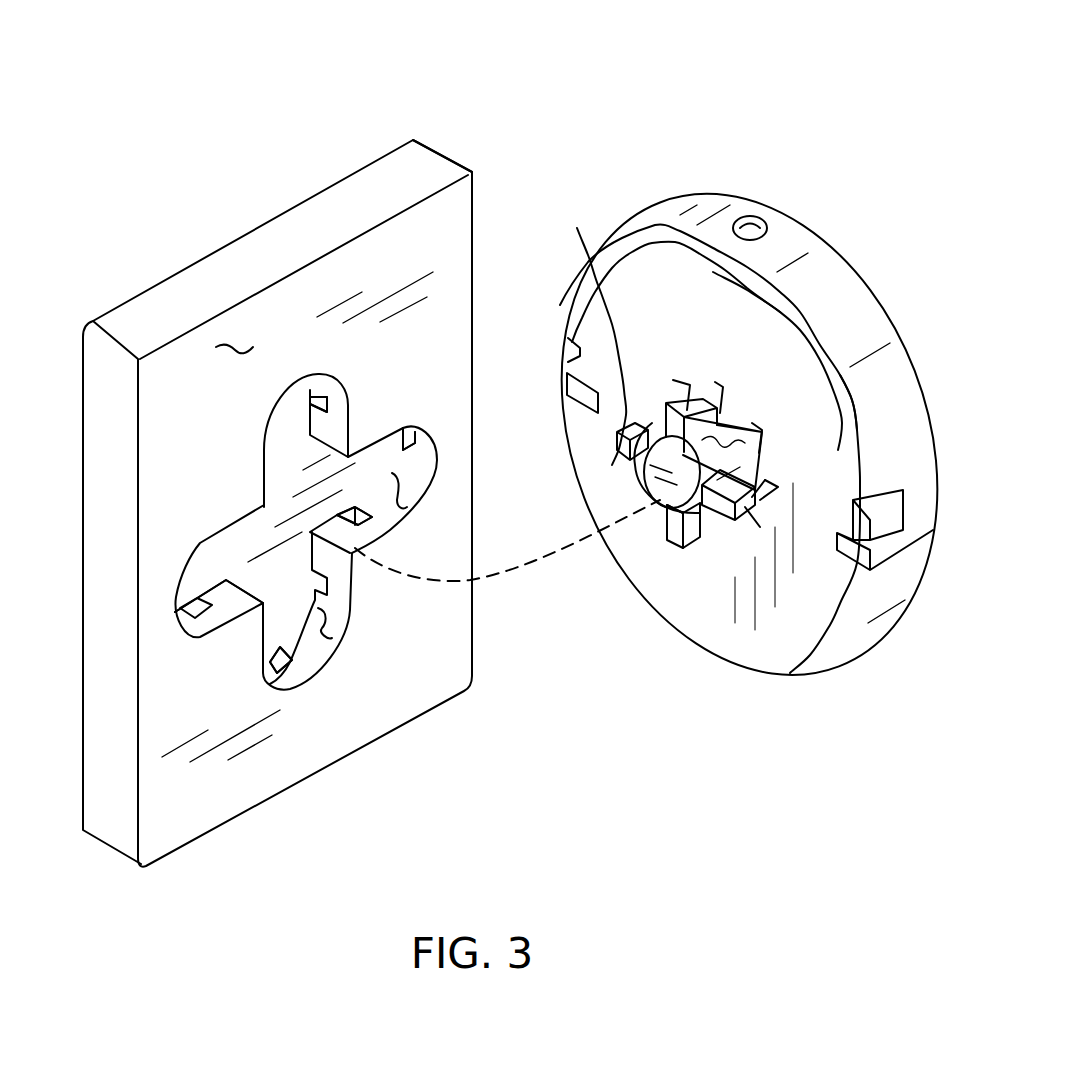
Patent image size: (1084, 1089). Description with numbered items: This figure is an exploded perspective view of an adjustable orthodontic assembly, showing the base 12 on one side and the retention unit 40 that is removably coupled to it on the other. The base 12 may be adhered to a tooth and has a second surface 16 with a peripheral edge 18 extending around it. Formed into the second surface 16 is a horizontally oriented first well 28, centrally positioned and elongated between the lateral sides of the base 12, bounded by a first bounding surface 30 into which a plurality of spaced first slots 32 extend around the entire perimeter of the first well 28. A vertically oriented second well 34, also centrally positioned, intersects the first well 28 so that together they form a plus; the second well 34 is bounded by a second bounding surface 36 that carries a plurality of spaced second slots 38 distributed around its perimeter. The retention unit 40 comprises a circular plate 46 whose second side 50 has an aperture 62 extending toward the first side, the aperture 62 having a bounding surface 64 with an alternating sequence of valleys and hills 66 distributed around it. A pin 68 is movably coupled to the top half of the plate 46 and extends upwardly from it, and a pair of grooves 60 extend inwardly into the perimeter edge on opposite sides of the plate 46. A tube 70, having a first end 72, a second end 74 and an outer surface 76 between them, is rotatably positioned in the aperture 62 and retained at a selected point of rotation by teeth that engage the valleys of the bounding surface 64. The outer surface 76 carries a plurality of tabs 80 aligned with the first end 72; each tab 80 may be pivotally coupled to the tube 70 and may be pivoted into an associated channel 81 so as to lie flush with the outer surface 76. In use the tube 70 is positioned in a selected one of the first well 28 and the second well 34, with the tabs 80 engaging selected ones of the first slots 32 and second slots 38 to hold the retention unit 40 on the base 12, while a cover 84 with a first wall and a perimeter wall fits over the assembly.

The base 12 is at (445, 153).
The second surface 16 is at (240, 353).
The peripheral edge 18 is at (114, 581).
The first well 28 is at (300, 630).
The first bounding surface 30 is at (410, 488).
The first slots 32 is at (403, 427).
The second well 34 is at (222, 554).
The second bounding surface 36 is at (333, 625).
The second slots 38 is at (319, 382).
The retention unit 40 is at (811, 134).
The plate 46 is at (763, 645).
The second side 50 is at (740, 645).
The grooves 60 is at (580, 467).
The aperture 62 is at (815, 425).
The bounding surface 64 is at (677, 387).
The hills 66 is at (745, 425).
The pin 68 is at (748, 225).
The tube 70 is at (700, 493).
The first end 72 is at (650, 512).
The second end 74 is at (845, 420).
The outer surface 76 is at (717, 382).
The tabs 80 is at (570, 330).
The channels 81 is at (748, 500).
The cover 84 is at (928, 415).